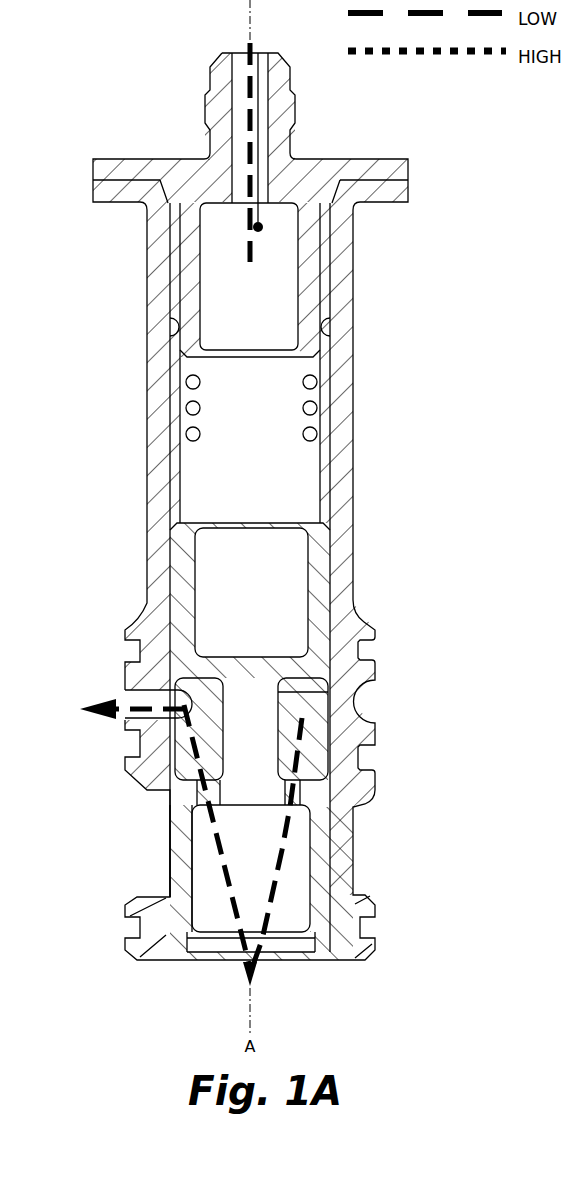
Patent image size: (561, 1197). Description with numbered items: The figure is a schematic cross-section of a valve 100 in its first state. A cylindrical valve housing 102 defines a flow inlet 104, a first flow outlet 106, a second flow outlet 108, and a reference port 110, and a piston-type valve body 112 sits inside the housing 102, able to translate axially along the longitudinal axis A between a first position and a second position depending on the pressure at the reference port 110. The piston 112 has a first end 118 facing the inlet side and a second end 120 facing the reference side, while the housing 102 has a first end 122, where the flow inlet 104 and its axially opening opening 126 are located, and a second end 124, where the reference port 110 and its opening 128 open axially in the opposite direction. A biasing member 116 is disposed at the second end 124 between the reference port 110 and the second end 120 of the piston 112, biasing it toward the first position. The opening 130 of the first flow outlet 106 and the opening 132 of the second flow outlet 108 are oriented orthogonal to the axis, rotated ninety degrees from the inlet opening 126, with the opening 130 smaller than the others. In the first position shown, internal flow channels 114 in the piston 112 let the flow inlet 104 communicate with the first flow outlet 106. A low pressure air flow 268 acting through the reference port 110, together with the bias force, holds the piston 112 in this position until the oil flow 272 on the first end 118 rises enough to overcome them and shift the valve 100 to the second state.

The valve 100 is at (102, 125).
The valve housing 102 is at (343, 407).
The flow inlet 104 is at (293, 908).
The first flow outlet 106 is at (132, 688).
The second flow outlet 108 is at (150, 836).
The reference port 110 is at (284, 246).
The valve body 112 is at (272, 702).
The internal flow channels 114 is at (205, 796).
The biasing member 116 is at (317, 382).
The first end of the piston 118 is at (182, 917).
The second end of the piston 120 is at (322, 540).
The first end of the valve housing 122 is at (345, 897).
The second end of the valve housing 124 is at (343, 237).
The opening of the flow inlet 126 is at (220, 937).
The opening of the reference port 128 is at (259, 60).
The opening of the first flow outlet 130 is at (178, 696).
The opening of the second flow outlet 132 is at (168, 884).
The low pressure air flow 268 is at (248, 120).
The oil flow 272 is at (240, 917).